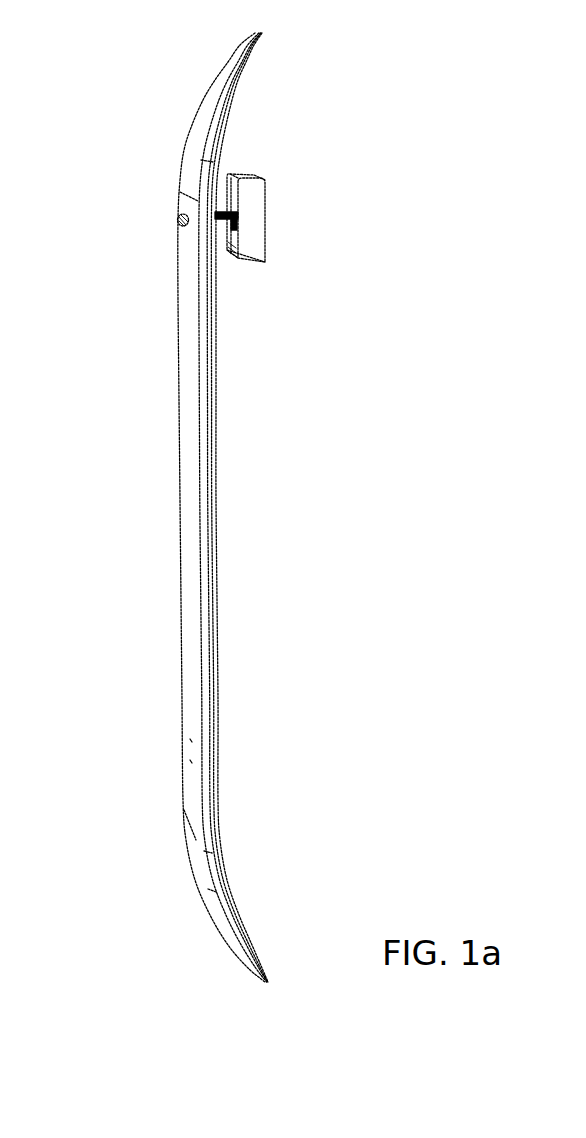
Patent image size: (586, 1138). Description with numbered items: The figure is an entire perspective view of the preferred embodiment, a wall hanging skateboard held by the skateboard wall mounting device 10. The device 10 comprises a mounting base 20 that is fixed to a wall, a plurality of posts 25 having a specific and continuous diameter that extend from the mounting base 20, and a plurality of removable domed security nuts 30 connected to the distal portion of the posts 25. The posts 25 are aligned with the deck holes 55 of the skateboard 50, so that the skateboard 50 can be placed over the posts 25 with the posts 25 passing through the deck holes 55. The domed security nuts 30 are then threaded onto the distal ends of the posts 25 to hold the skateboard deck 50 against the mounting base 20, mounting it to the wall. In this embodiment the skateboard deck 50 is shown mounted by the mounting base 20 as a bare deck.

The skateboard wall mounting device 10 is at (368, 65).
The mounting base 20 is at (257, 210).
The post 25 is at (221, 231).
The removable domed security nut 30 is at (173, 219).
The skateboard 50 is at (182, 520).
The deck hole 55 is at (178, 287).